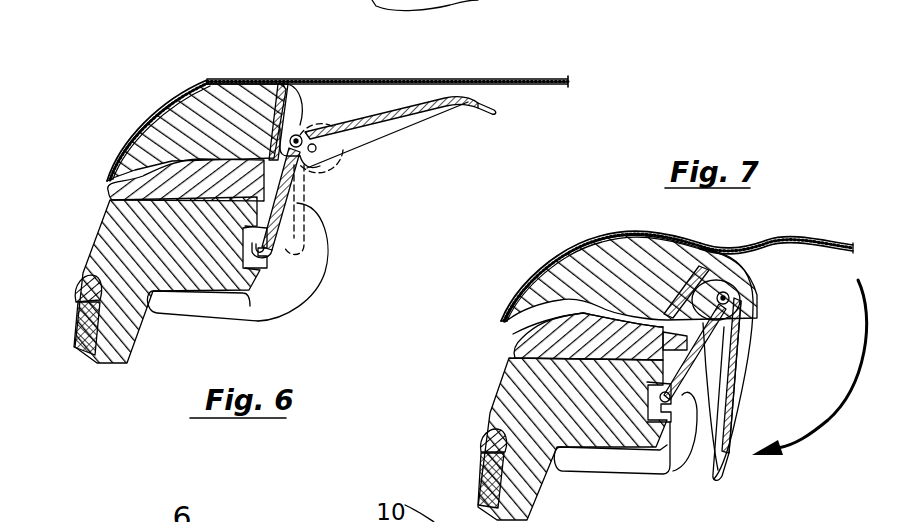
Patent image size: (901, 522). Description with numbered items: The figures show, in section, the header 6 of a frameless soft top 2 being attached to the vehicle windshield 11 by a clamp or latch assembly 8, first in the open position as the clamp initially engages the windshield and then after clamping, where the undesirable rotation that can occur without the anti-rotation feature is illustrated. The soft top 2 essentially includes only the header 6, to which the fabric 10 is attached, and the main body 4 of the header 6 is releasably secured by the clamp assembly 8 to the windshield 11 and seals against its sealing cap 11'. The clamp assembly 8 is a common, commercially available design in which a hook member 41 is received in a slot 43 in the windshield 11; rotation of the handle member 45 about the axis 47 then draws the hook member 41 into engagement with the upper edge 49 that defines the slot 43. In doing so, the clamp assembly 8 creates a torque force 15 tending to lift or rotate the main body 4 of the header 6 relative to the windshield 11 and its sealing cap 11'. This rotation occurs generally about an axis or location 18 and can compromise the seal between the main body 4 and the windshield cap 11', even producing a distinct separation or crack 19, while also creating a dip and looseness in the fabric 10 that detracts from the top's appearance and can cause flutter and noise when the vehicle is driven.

In FIG. 6, the soft top 2 is at (529, 75).
In FIG. 7, the soft top 2 is at (774, 232).
In FIG. 6, the main body 4 is at (231, 122).
In FIG. 7, the main body 4 is at (621, 262).
In FIG. 6, the header 6 is at (199, 118).
In FIG. 7, the header 6 is at (596, 265).
In FIG. 6, the clamp assembly 8 is at (368, 174).
In FIG. 7, the clamp assembly 8 is at (770, 338).
In FIG. 6, the fabric 10 is at (418, 78).
In FIG. 7, the fabric 10 is at (716, 240).
In FIG. 6, the vehicle windshield 11 is at (152, 219).
In FIG. 7, the vehicle windshield 11 is at (531, 439).
In FIG. 7, the sealing cap 11' is at (560, 347).
In FIG. 7, the torque force 15 is at (833, 413).
In FIG. 7, the axis or location 18 is at (664, 239).
In FIG. 7, the separation or crack 19 is at (500, 332).
In FIG. 6, the hook member 41 is at (304, 203).
In FIG. 7, the hook member 41 is at (742, 367).
In FIG. 6, the slot 43 is at (258, 320).
In FIG. 7, the slot 43 is at (668, 473).
In FIG. 6, the handle member 45 is at (472, 112).
In FIG. 7, the handle member 45 is at (737, 416).
In FIG. 6, the axis 47 is at (303, 137).
In FIG. 7, the upper edge 49 is at (686, 400).